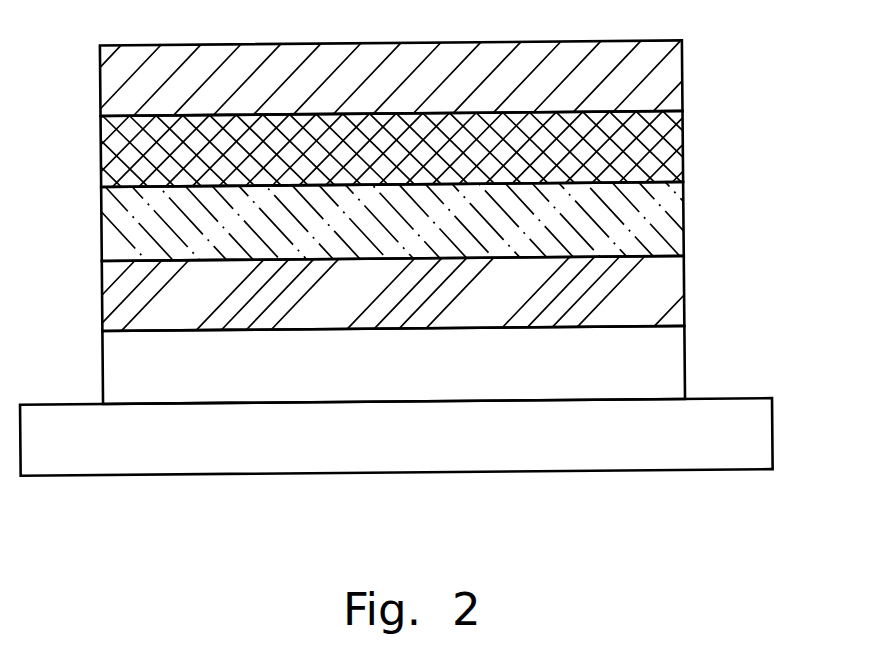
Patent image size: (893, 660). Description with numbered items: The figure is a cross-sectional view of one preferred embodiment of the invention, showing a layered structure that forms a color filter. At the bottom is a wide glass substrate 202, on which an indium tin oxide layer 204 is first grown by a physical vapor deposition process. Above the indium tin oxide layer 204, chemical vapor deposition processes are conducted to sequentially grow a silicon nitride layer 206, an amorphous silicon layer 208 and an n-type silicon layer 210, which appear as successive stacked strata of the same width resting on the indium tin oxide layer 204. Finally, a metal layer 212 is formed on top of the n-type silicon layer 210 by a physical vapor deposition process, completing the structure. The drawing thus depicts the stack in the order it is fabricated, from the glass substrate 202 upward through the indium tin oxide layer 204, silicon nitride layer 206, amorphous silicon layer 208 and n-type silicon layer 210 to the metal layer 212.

The glass substrate 202 is at (757, 438).
The indium tin oxide layer 204 is at (672, 365).
The silicon nitride layer 206 is at (672, 293).
The amorphous silicon layer 208 is at (672, 223).
The n-type silicon layer 210 is at (670, 152).
The metal layer 212 is at (670, 78).